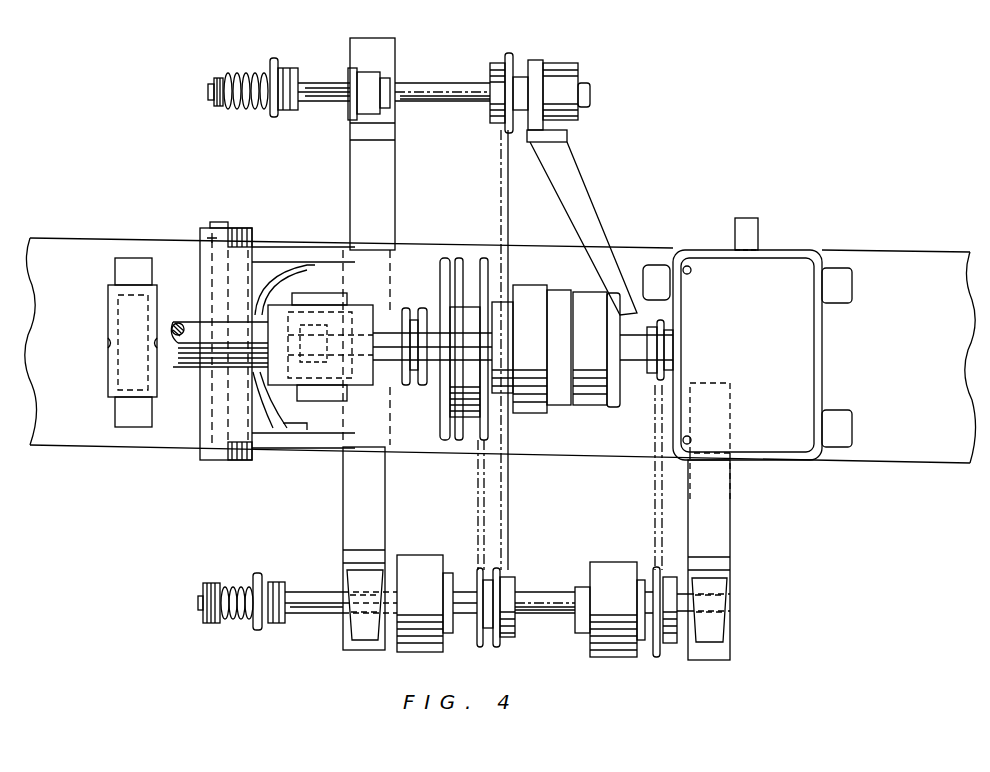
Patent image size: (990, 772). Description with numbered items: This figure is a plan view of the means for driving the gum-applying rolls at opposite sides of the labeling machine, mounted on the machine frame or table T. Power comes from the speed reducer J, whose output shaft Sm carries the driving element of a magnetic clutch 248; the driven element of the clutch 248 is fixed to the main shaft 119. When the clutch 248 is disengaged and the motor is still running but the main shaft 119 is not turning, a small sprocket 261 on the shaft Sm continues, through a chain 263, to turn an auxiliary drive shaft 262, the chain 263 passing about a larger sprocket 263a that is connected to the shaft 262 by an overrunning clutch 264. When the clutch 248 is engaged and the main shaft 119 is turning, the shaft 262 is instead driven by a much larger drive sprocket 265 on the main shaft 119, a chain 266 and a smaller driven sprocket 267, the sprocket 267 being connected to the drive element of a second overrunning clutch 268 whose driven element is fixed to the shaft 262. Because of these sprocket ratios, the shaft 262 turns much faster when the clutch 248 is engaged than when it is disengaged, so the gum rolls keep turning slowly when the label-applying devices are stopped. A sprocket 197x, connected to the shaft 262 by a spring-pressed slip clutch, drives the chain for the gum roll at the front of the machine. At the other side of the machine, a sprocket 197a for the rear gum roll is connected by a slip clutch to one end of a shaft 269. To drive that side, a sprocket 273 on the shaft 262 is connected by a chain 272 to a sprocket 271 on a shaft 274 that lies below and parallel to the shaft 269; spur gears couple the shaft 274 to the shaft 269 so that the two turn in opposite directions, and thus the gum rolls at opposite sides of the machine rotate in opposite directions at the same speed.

The table T is at (163, 437).
The main shaft 119 is at (385, 332).
The sprocket 265 is at (480, 257).
The magnetic clutch 248 is at (578, 450).
The sprocket 261 is at (667, 332).
The output shaft Sm is at (600, 332).
The speed reducer J is at (790, 251).
The sprocket 197a is at (272, 118).
The shaft 269 is at (313, 85).
The shaft 274 is at (418, 90).
The sprocket 271 is at (508, 57).
The chain 272 is at (505, 515).
The chain 266 is at (480, 478).
The chain 263 is at (654, 528).
The sprocket 197x is at (287, 537).
The overrunning clutch 268 is at (417, 558).
The sprocket 267 is at (480, 648).
The sprocket 273 is at (502, 568).
The auxiliary drive shaft 262 is at (532, 603).
The overrunning clutch 264 is at (597, 637).
The sprocket 263a is at (656, 658).